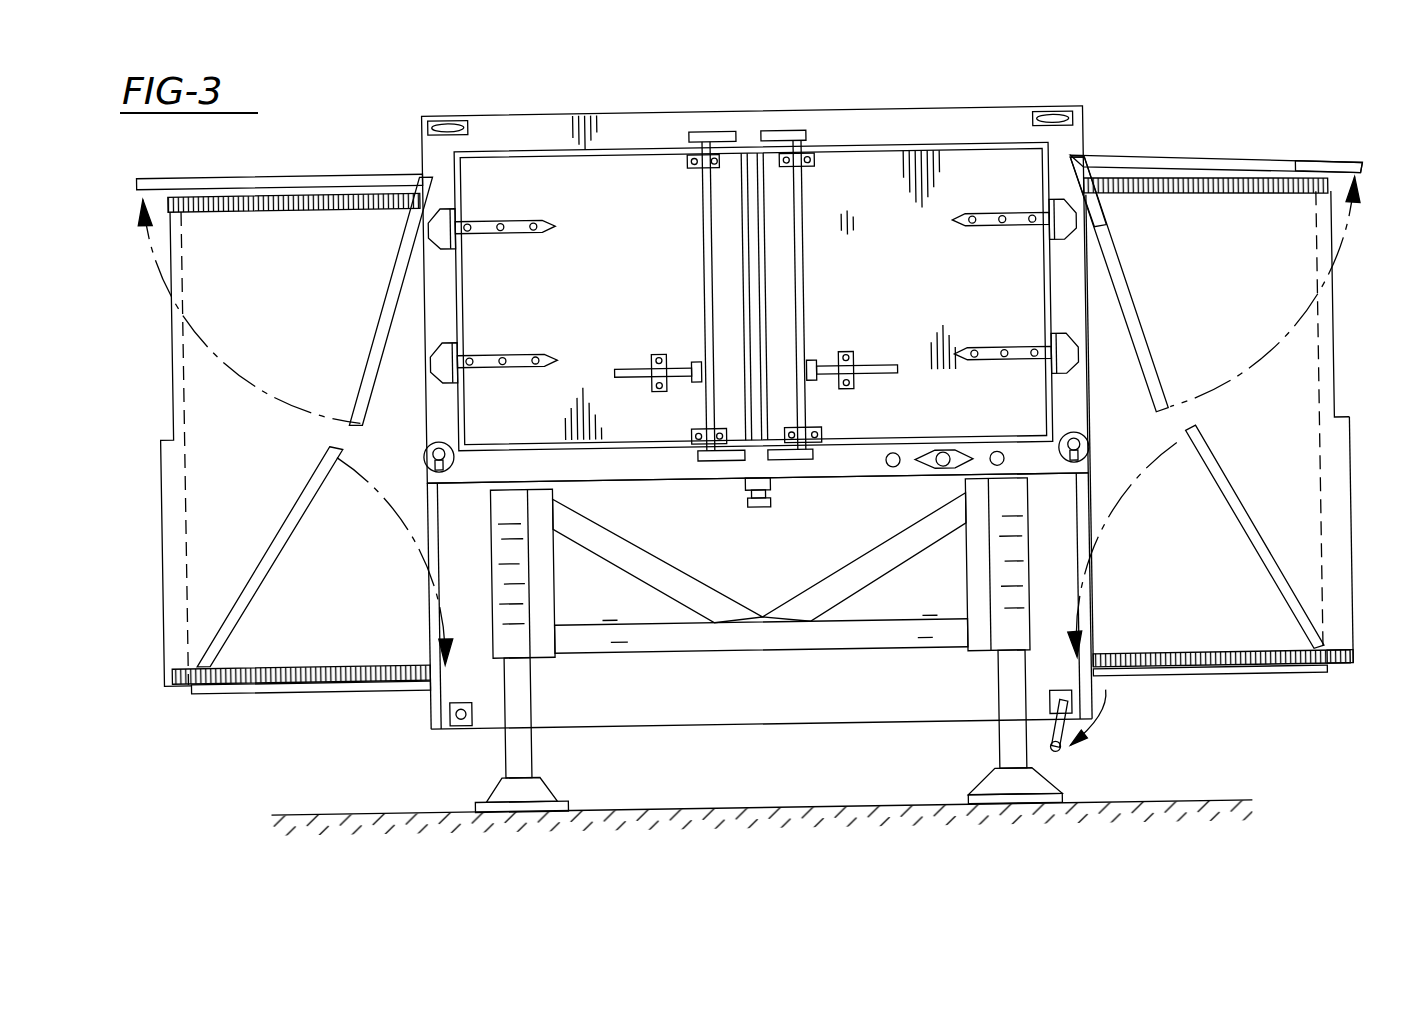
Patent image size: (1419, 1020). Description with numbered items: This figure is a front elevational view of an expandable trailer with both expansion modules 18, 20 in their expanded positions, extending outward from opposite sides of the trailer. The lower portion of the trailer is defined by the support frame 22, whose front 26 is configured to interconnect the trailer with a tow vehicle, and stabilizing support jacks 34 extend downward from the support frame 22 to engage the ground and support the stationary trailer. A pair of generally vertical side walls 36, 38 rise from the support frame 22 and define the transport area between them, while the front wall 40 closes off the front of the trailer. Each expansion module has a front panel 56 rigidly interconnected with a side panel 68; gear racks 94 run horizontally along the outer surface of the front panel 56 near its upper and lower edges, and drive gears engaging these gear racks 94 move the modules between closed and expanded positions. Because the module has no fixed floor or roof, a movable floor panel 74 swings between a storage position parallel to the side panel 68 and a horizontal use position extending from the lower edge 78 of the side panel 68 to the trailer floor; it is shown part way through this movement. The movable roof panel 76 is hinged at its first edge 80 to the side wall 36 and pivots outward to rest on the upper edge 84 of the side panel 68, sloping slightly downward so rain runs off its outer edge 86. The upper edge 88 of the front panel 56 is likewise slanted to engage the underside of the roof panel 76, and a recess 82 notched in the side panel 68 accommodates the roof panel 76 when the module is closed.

The expansion module 18 is at (1306, 400).
The expansion module 20 is at (168, 459).
The support frame 22 is at (776, 702).
The front of the support frame 26 is at (828, 469).
The stabilizing support jacks 34 is at (516, 741).
The side wall 36 is at (1079, 538).
The side wall 38 is at (436, 525).
The front wall 40 is at (930, 114).
The front panel 56 is at (1250, 422).
The side panel 68 is at (1342, 526).
The movable floor panel 74 is at (1232, 510).
The movable roof panel 76 is at (1230, 167).
The lower edge of the side panel 78 is at (1340, 676).
The first edge of the roof panel 80 is at (1095, 155).
The recess 82 is at (1354, 319).
The upper edge of the side panel 84 is at (1315, 169).
The outer edge of the roof panel 86 is at (1357, 171).
The upper edge of the front panel 88 is at (1150, 173).
The gear racks 94 is at (384, 184).